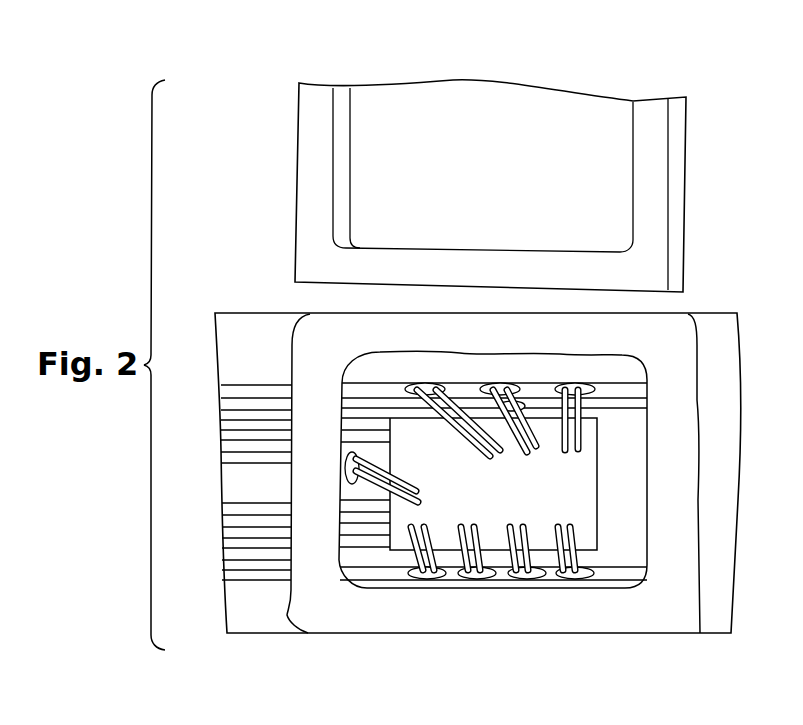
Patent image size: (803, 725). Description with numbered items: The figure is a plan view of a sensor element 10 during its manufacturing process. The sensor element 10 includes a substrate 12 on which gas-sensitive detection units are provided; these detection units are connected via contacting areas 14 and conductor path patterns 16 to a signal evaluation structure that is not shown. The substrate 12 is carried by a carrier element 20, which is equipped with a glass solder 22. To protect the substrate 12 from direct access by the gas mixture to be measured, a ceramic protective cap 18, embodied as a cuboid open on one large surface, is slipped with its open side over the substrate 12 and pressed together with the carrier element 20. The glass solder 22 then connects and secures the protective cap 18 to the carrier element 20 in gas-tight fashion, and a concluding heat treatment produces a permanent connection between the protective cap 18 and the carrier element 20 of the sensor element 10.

The sensor element 10 is at (250, 276).
The substrate 12 is at (570, 483).
The contacting areas 14 is at (427, 382).
The conductor path patterns 16 is at (226, 456).
The ceramic protective cap 18 is at (653, 147).
The carrier element 20 is at (710, 340).
The glass solder 22 is at (613, 613).